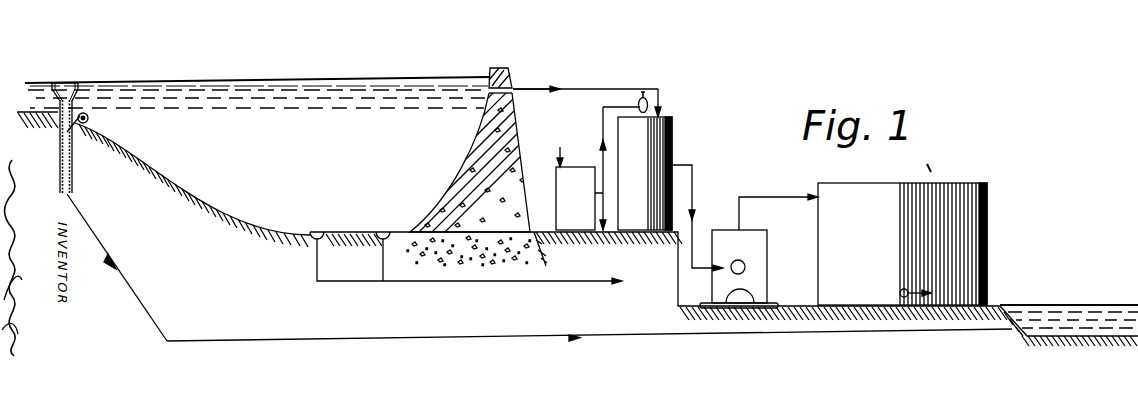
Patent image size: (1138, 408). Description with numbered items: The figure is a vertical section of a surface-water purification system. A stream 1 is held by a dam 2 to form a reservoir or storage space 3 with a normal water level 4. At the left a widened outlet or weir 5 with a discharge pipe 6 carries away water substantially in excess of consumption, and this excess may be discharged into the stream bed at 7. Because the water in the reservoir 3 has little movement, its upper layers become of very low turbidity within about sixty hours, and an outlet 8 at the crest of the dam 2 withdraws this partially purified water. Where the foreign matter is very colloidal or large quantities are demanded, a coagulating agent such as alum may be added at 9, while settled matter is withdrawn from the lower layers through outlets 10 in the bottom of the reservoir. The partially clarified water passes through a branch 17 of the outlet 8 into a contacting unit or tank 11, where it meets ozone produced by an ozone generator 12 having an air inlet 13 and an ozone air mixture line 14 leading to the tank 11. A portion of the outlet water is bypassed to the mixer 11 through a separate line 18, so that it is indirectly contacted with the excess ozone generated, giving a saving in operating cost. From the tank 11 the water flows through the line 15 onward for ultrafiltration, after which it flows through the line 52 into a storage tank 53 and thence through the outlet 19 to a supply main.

The stream 1 is at (53, 83).
The dam 2 is at (517, 113).
The reservoir or storage space 3 is at (258, 122).
The normal water level 4 is at (378, 81).
The widened outlet or weir 5 is at (74, 82).
The discharge pipe 6 is at (74, 160).
The stream bed 7 is at (1077, 305).
The outlet 8 is at (517, 88).
The coagulating agent addition point 9 is at (90, 118).
The outlets 10 is at (329, 214).
The contacting unit or tank 11 is at (672, 139).
The ozone generator 12 is at (556, 178).
The air inlet 13 is at (559, 151).
The ozone air mixture line 14 is at (602, 131).
The line 15 is at (695, 190).
The branch 17 is at (600, 84).
The separate line 18 is at (661, 96).
The outlet 19 is at (905, 289).
The line 52 is at (792, 195).
The storage tank 53 is at (988, 218).